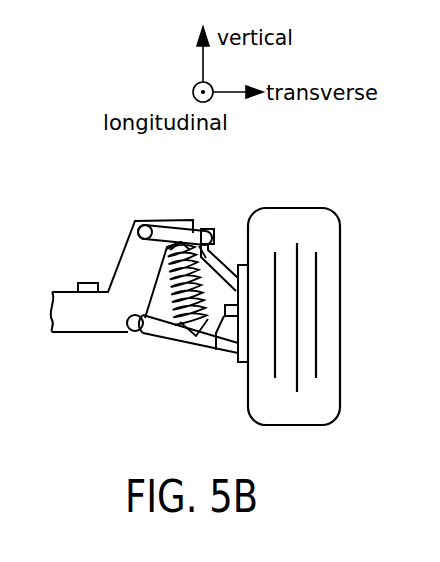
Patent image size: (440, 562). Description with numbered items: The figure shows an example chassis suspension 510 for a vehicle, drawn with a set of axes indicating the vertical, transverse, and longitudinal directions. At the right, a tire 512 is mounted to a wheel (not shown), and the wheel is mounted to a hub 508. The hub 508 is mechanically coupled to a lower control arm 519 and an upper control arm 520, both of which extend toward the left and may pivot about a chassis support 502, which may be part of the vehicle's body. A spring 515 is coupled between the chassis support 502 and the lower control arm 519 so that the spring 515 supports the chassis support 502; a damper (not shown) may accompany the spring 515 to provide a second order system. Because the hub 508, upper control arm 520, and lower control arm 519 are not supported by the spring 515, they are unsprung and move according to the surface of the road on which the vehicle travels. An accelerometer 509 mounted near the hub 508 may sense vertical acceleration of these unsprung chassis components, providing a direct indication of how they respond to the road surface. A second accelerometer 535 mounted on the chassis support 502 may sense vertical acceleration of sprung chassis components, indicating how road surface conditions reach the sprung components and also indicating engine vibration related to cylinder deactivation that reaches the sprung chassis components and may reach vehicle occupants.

The chassis support 502 is at (67, 334).
The hub 508 is at (242, 363).
The accelerometer 509 is at (216, 340).
The chassis suspension 510 is at (103, 198).
The tire 512 is at (340, 303).
The spring 515 is at (176, 300).
The lower control arm 519 is at (185, 343).
The upper control arm 520 is at (183, 222).
The accelerometer 535 is at (89, 283).